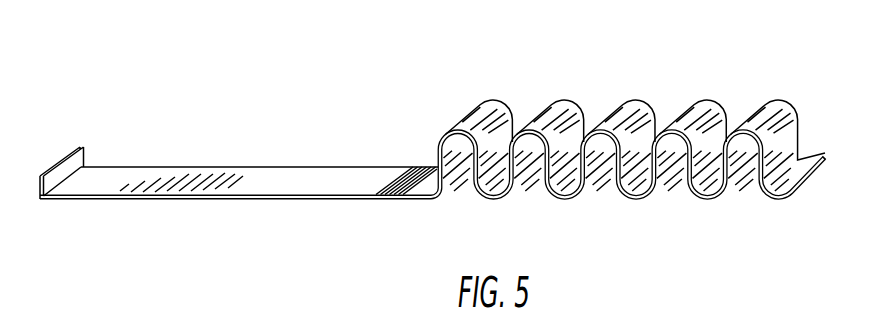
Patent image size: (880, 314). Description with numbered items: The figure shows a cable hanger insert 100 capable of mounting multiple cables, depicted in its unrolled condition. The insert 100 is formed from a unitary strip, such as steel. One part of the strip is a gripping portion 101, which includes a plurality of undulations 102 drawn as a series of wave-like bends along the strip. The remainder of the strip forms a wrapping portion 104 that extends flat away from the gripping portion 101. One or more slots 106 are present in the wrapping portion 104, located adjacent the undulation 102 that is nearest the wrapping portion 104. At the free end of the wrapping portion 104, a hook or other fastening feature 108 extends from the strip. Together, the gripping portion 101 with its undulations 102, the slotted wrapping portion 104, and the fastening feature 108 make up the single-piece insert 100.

The cable hanger insert 100 is at (808, 142).
The gripping portion 101 is at (648, 228).
The undulations 102 is at (700, 160).
The wrapping portion 104 is at (227, 203).
The slots 106 is at (397, 202).
The hook or other fastening feature 108 is at (47, 172).